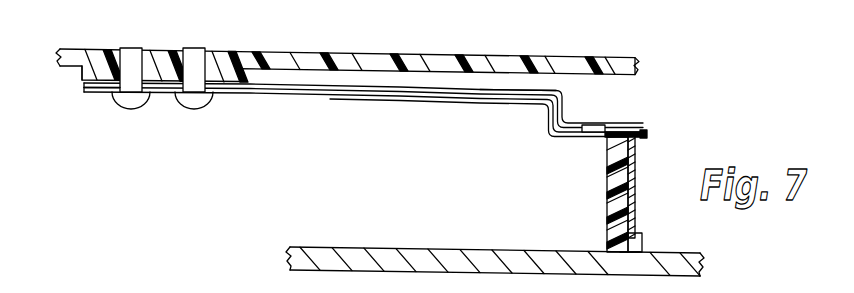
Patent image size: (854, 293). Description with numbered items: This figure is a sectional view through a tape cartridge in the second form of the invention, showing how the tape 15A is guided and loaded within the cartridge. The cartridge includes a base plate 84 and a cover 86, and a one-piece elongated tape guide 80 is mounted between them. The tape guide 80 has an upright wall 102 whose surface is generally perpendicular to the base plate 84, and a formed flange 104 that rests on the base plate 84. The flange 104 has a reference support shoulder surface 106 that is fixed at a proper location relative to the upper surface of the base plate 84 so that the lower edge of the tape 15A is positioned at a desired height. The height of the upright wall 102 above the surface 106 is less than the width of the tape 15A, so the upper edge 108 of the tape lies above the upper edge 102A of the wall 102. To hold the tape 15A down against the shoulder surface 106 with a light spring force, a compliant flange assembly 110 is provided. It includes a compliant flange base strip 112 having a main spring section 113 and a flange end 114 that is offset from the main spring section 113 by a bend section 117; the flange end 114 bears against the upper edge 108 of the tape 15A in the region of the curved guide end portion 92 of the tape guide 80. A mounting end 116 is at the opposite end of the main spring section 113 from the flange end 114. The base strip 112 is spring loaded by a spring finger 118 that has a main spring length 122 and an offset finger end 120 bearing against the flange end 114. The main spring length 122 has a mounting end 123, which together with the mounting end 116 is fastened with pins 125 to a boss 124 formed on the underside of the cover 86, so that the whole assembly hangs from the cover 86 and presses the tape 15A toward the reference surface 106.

The elongated tape guide 80 is at (595, 151).
The base plate 84 is at (520, 250).
The cover 86 is at (622, 74).
The curved guide end portion 92 is at (170, 292).
The upright wall 102 is at (670, 164).
The upper edge of the wall 102A is at (622, 136).
The formed flange 104 is at (645, 247).
The reference support shoulder surface 106 is at (638, 234).
The upper edge of the tape 108 is at (630, 136).
The compliant flange assembly 110 is at (363, 92).
The compliant flange base strip 112 is at (440, 102).
The main spring section 113 is at (353, 100).
The flange end 114 is at (647, 130).
The tape 15A is at (634, 187).
The mounting end 116 is at (99, 92).
The bend section 117 is at (547, 116).
The spring finger 118 is at (534, 89).
The offset finger end 120 is at (583, 124).
The main spring length 122 is at (475, 87).
The mounting end 123 is at (110, 90).
The boss 124 is at (83, 79).
The pins 125 is at (190, 48).